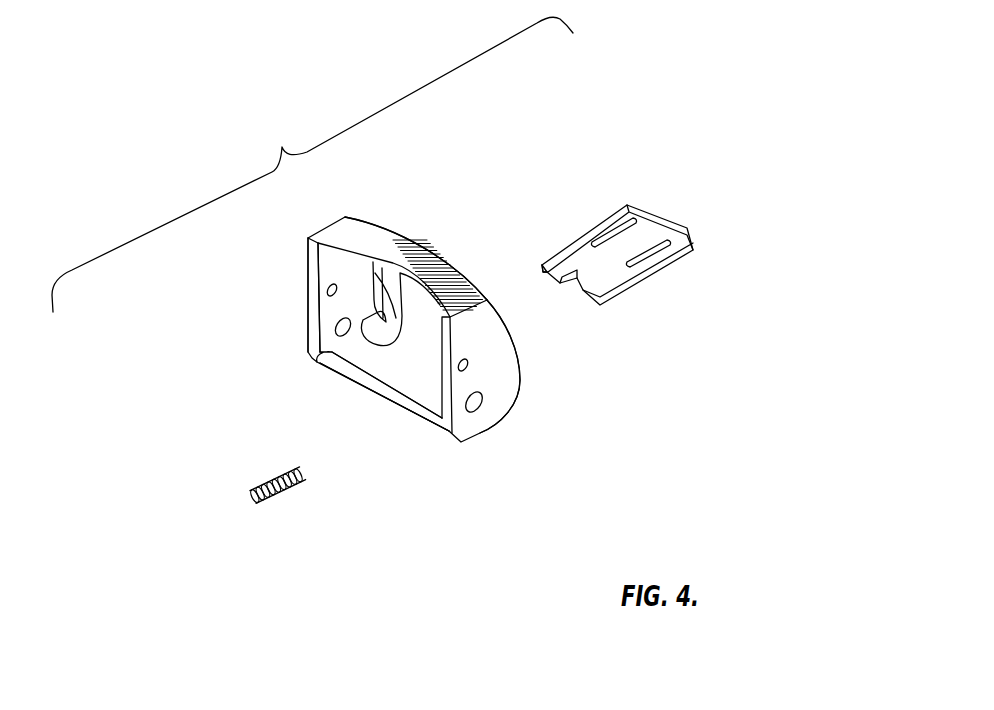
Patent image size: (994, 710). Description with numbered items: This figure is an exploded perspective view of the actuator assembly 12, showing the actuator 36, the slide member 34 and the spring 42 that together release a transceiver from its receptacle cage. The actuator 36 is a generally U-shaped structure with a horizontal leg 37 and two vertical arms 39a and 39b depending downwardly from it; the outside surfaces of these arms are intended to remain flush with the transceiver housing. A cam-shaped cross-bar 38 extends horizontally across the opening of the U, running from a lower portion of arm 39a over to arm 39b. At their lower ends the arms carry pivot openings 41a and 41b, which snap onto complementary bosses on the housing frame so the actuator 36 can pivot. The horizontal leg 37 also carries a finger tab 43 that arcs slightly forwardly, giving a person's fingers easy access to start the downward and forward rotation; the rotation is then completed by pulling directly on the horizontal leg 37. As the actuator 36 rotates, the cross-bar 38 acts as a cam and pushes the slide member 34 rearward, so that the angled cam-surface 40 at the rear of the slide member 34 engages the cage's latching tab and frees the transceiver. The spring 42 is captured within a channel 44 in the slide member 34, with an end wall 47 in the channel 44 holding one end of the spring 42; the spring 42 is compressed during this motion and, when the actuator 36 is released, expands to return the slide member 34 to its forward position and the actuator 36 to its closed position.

The actuator assembly 12 is at (222, 127).
The slide member 34 is at (655, 219).
The actuator 36 is at (493, 420).
The horizontal leg 37 is at (372, 220).
The cross-bar 38 is at (343, 372).
The first vertical arm 39a is at (502, 360).
The second vertical arm 39b is at (307, 283).
The angled cam-surface 40 is at (545, 276).
The pivot opening 41a is at (490, 397).
The pivot opening 41b is at (343, 327).
The spring 42 is at (292, 515).
The finger tab 43 is at (433, 305).
The channel 44 is at (613, 240).
The end wall 47 is at (637, 250).